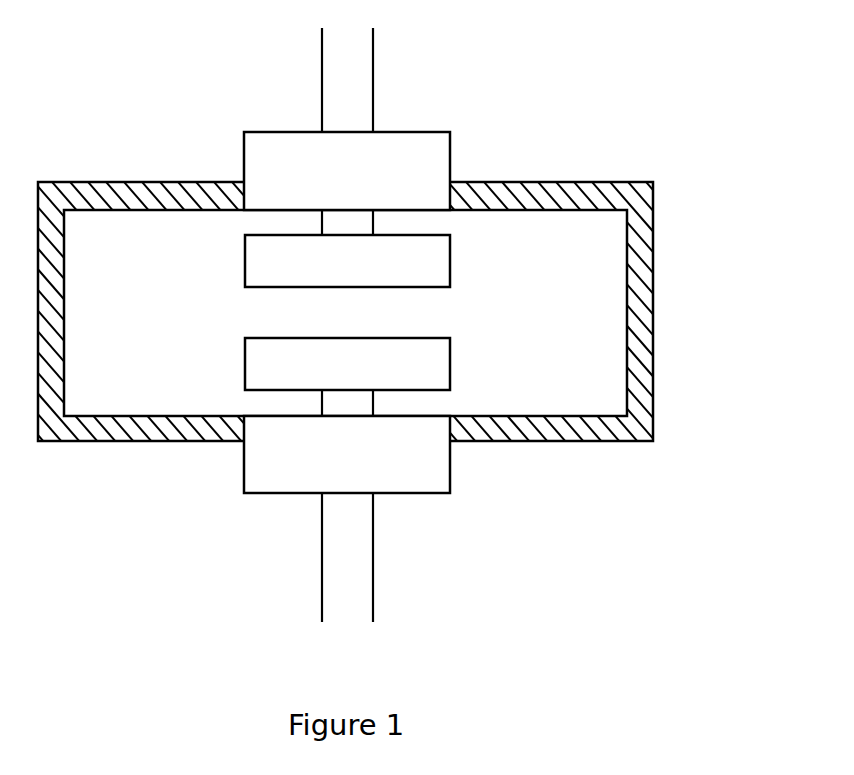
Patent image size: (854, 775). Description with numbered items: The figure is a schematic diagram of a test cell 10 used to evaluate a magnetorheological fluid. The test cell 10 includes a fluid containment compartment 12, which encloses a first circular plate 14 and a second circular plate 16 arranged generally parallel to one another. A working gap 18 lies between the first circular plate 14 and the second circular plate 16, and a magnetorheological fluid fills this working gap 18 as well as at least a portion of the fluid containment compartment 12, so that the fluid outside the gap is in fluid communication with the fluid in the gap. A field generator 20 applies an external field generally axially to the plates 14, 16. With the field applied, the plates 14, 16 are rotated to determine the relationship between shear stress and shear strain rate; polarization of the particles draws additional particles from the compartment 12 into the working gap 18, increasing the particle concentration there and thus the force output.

The test cell 10 is at (427, 325).
The fluid containment compartment 12 is at (652, 312).
The first circular plate 14 is at (418, 268).
The second circular plate 16 is at (433, 354).
The working gap 18 is at (331, 318).
The field generator 20 is at (347, 325).